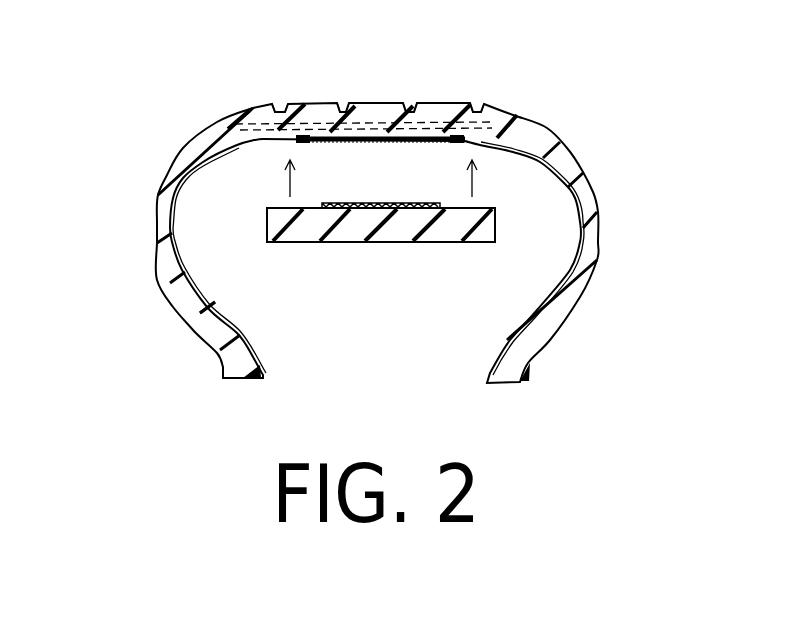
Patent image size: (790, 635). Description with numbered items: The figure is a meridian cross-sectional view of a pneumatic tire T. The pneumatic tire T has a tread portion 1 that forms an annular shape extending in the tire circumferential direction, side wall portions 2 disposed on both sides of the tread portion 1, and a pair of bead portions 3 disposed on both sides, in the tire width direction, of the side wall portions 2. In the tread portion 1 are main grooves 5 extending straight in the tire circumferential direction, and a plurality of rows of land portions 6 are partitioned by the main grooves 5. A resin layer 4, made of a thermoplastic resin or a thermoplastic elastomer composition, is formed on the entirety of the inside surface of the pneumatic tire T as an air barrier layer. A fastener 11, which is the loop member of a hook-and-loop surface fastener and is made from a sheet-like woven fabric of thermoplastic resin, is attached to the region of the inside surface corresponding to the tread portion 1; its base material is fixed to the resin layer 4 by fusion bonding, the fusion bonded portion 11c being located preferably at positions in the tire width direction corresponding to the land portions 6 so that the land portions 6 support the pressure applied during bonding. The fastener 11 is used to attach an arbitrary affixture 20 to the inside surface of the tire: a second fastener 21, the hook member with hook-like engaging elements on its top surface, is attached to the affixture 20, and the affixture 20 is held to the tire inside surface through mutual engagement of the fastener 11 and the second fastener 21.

The pneumatic tire T is at (546, 120).
The tread portion 1 is at (375, 102).
The side wall portions 2 is at (157, 223).
The bead portions 3 is at (222, 378).
The resin layer 4 is at (245, 340).
The main grooves 5 is at (281, 110).
The land portions 6 is at (322, 110).
The fastener 11 is at (375, 141).
The fusion bonded portion 11c is at (313, 143).
The affixture 20 is at (479, 243).
The second fastener 21 is at (365, 206).